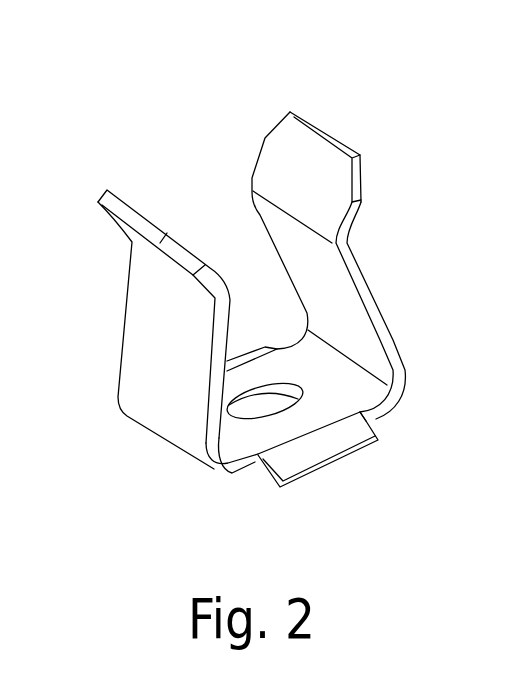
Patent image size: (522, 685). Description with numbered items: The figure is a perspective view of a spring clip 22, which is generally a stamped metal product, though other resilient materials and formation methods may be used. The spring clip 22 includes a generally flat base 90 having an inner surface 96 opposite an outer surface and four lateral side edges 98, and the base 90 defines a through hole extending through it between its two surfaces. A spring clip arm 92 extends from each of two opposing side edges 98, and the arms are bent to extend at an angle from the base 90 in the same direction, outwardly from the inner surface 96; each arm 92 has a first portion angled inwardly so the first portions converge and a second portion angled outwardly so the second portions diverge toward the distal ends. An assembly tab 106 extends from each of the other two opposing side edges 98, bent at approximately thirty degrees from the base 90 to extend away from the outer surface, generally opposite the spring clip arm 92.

The spring clip 22 is at (173, 130).
The base 90 is at (380, 419).
The spring clip arm 92 is at (365, 282).
The inner surface 96 is at (338, 398).
The lateral side edge 98 is at (243, 467).
The assembly tab 106 is at (320, 450).